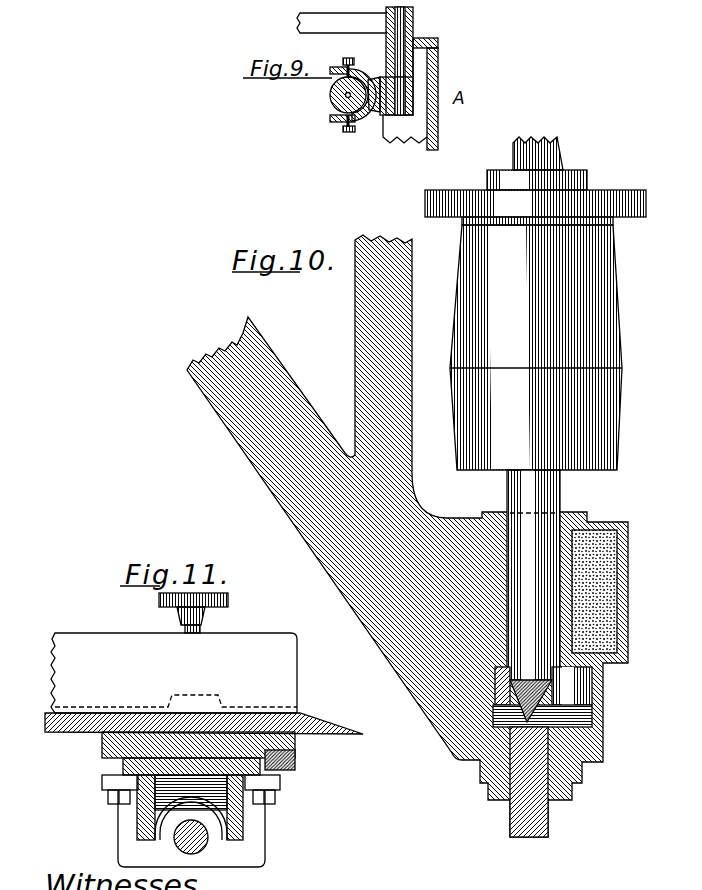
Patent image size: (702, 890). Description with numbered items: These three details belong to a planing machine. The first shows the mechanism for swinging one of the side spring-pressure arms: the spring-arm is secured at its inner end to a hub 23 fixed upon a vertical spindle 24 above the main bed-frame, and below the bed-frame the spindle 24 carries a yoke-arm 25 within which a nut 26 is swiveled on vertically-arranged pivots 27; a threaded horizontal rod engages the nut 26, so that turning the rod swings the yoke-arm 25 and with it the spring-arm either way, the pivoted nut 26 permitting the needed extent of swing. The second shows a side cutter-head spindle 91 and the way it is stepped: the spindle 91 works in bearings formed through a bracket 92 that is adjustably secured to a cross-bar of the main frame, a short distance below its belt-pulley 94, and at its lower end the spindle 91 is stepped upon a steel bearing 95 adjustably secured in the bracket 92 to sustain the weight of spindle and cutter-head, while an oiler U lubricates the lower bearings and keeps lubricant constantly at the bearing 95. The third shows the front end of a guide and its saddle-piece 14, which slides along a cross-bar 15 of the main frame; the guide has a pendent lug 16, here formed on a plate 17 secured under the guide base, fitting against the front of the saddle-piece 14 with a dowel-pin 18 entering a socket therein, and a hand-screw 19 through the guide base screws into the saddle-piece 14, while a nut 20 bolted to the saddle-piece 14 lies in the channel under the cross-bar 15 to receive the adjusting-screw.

In FIG. 9, the hub 23 is at (414, 61).
In FIG. 9, the vertical spindle 24 is at (403, 83).
In FIG. 9, the yoke-arm 25 is at (358, 76).
In FIG. 9, the nut 26 is at (331, 99).
In FIG. 9, the vertically-arranged pivots 27 is at (346, 95).
In FIG. 10, the vertical cutter-head spindle 91 is at (545, 147).
In FIG. 10, the bracket 92 is at (407, 536).
In FIG. 10, the belt-pulley 94 is at (540, 320).
In FIG. 10, the steel bearing 95 is at (541, 790).
In FIG. 10, the oiler U is at (611, 591).
In FIG. 11, the saddle-piece 14 is at (176, 812).
In FIG. 11, the cross-bar 15 is at (245, 828).
In FIG. 11, the pendent lug 16 is at (294, 745).
In FIG. 11, the plate 17 is at (92, 733).
In FIG. 11, the dowel-pin 18 is at (295, 768).
In FIG. 11, the hand-screw 19 is at (208, 613).
In FIG. 11, the nut 20 is at (220, 845).